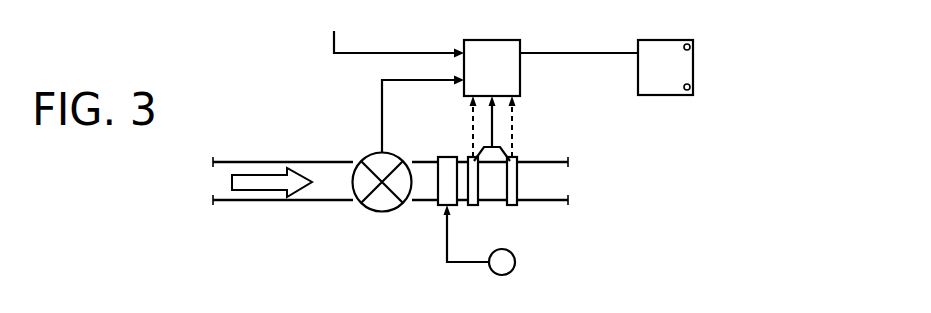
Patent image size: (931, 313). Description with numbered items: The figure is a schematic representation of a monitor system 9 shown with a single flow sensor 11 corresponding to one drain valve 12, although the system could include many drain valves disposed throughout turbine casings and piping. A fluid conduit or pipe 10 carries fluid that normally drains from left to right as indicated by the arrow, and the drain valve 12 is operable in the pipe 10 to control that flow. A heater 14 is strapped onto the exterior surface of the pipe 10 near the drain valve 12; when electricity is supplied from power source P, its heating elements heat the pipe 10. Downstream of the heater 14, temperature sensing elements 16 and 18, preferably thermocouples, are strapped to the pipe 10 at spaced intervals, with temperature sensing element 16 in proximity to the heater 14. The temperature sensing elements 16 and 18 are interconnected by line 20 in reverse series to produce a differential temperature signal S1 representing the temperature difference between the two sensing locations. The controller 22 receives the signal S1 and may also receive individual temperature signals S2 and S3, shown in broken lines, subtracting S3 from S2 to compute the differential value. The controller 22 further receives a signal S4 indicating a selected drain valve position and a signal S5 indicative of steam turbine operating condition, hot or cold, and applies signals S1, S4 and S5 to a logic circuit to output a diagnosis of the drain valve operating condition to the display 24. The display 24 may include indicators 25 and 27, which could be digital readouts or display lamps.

The monitor system 9 is at (648, 150).
The pipe 10 is at (270, 201).
The flow sensor 11 is at (486, 222).
The drain valve 12 is at (362, 203).
The heater 14 is at (440, 157).
The temperature sensing element 16 is at (479, 188).
The temperature sensing element 18 is at (518, 188).
The line 20 is at (503, 145).
The controller 22 is at (512, 52).
The display 24 is at (680, 51).
The indicator 25 is at (690, 87).
The indicator 27 is at (690, 48).
The differential temperature signal S1 is at (493, 123).
The individual temperature signal S2 is at (473, 137).
The individual temperature signal S3 is at (512, 127).
The drain valve position signal S4 is at (381, 127).
The turbine operating condition signal S5 is at (391, 33).